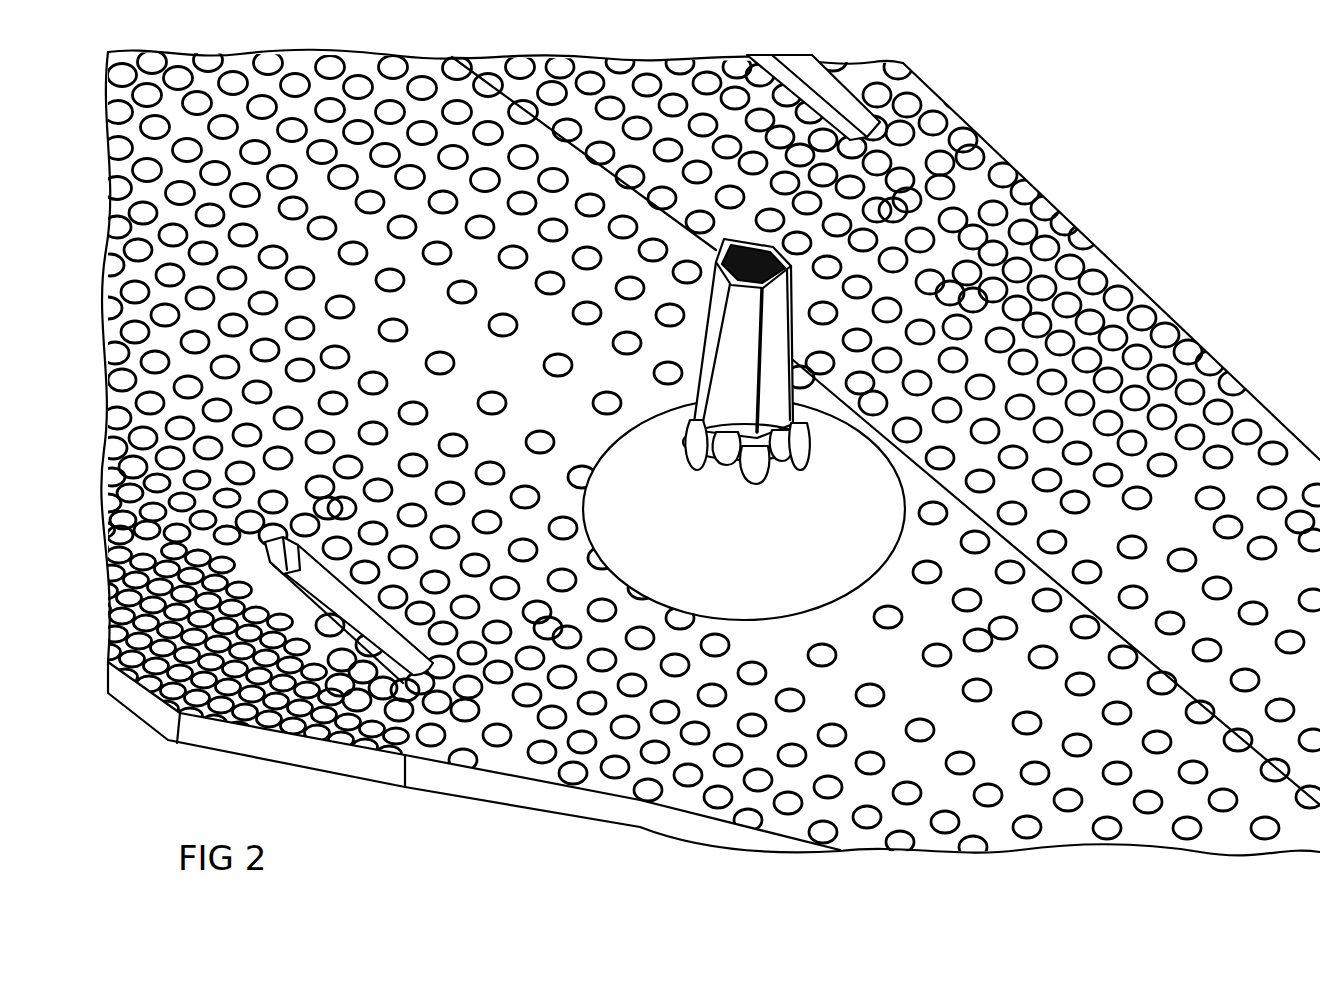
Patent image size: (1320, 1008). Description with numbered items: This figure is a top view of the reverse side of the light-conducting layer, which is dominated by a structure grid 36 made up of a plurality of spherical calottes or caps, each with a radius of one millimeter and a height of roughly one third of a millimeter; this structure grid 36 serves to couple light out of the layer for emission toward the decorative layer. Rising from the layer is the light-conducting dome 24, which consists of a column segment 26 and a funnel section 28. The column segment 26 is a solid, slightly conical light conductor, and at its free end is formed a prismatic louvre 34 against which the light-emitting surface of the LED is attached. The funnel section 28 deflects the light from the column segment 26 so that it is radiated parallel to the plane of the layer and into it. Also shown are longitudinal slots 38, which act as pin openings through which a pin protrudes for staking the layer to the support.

The light-conducting dome 24 is at (829, 296).
The column segment 26 is at (784, 324).
The funnel section 28 is at (668, 427).
The prismatic louvre 34 is at (772, 242).
The structure grid 36 is at (508, 716).
The longitudinal slots 38 is at (852, 104).